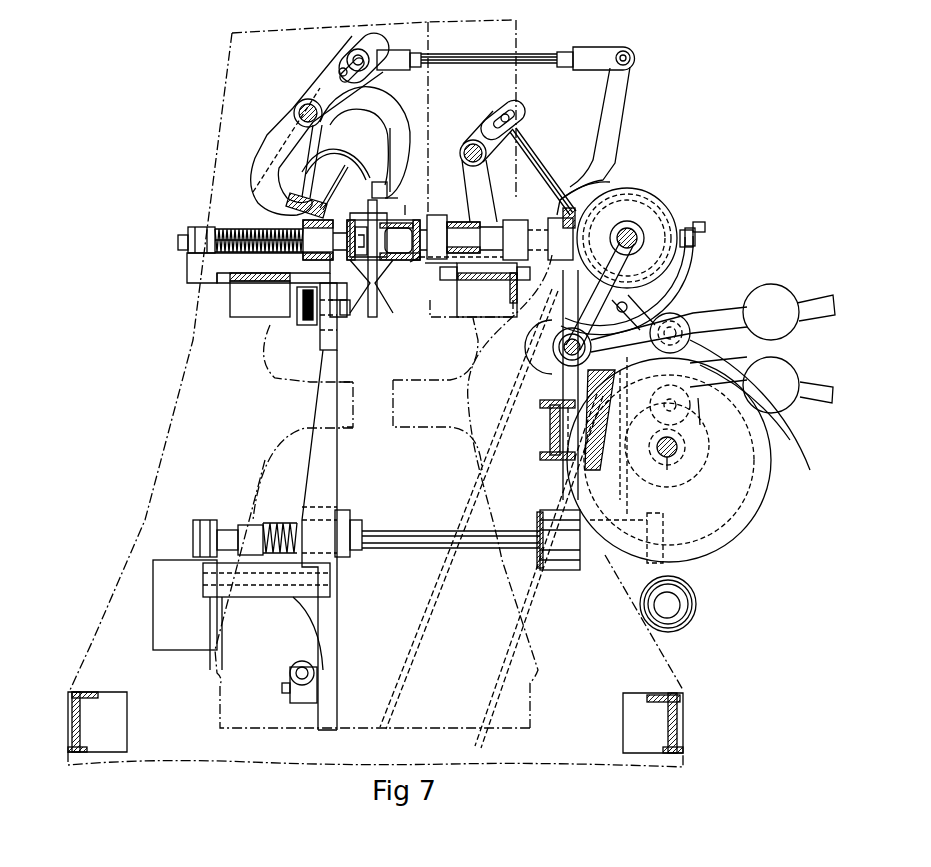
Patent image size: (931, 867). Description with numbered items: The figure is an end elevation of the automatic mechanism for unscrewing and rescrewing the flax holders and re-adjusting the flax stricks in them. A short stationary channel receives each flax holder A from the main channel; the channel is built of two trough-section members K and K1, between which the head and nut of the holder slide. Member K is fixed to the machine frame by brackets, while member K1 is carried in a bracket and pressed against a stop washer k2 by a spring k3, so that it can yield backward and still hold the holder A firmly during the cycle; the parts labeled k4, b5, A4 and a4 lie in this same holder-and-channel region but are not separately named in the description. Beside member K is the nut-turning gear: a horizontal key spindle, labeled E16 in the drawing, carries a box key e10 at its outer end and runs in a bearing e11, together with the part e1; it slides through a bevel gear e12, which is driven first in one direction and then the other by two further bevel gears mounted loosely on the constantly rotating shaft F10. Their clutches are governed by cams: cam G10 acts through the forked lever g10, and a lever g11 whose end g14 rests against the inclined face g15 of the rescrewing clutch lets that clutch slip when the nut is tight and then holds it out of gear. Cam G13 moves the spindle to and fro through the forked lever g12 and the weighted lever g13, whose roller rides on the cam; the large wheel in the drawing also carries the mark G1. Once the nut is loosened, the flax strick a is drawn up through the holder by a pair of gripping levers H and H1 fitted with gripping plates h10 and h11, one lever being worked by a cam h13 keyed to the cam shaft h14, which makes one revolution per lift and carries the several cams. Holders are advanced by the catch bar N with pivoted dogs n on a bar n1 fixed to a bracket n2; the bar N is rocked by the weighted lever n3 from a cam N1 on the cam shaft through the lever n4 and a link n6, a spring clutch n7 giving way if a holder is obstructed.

The lever H is at (283, 118).
The curved arm H1 is at (385, 103).
The flax-strick a is at (324, 154).
The gripping plate h10 is at (338, 158).
The gripping plate h11 is at (383, 168).
The stop washer k2 is at (192, 229).
The spring k3 is at (240, 229).
The channel member K1 is at (360, 222).
The part b5 is at (409, 204).
The channel member K is at (430, 248).
The flax holder A is at (368, 279).
The plate web A4 is at (381, 286).
The part a4 is at (422, 274).
The box key e10 is at (437, 215).
The shaft e1 is at (462, 224).
The bearing e11 is at (540, 225).
The rod E16 is at (540, 178).
The block k4 is at (232, 290).
The bar n1 is at (304, 315).
The bracket n2 is at (298, 310).
The catch bar N is at (320, 330).
The dogs or catches n is at (345, 308).
The weighted lever n3 is at (323, 445).
The spring clutch n7 is at (340, 515).
The link or rod n6 is at (302, 668).
The forked lever g12 is at (494, 159).
The bevel gear e12 is at (605, 180).
The lever end g14 is at (587, 188).
The constantly rotating shaft F10 is at (627, 238).
The inclined face g15 is at (703, 218).
The forked lever g10 is at (690, 283).
The lever g11 is at (558, 347).
The weighted lever g13 is at (825, 305).
The cam N1 is at (720, 563).
The wheel G1 is at (649, 460).
The cam h13 is at (710, 430).
The cam shaft h14 is at (680, 479).
The cam G10 is at (798, 462).
The cam G13 is at (790, 440).
The lever n4 is at (682, 606).